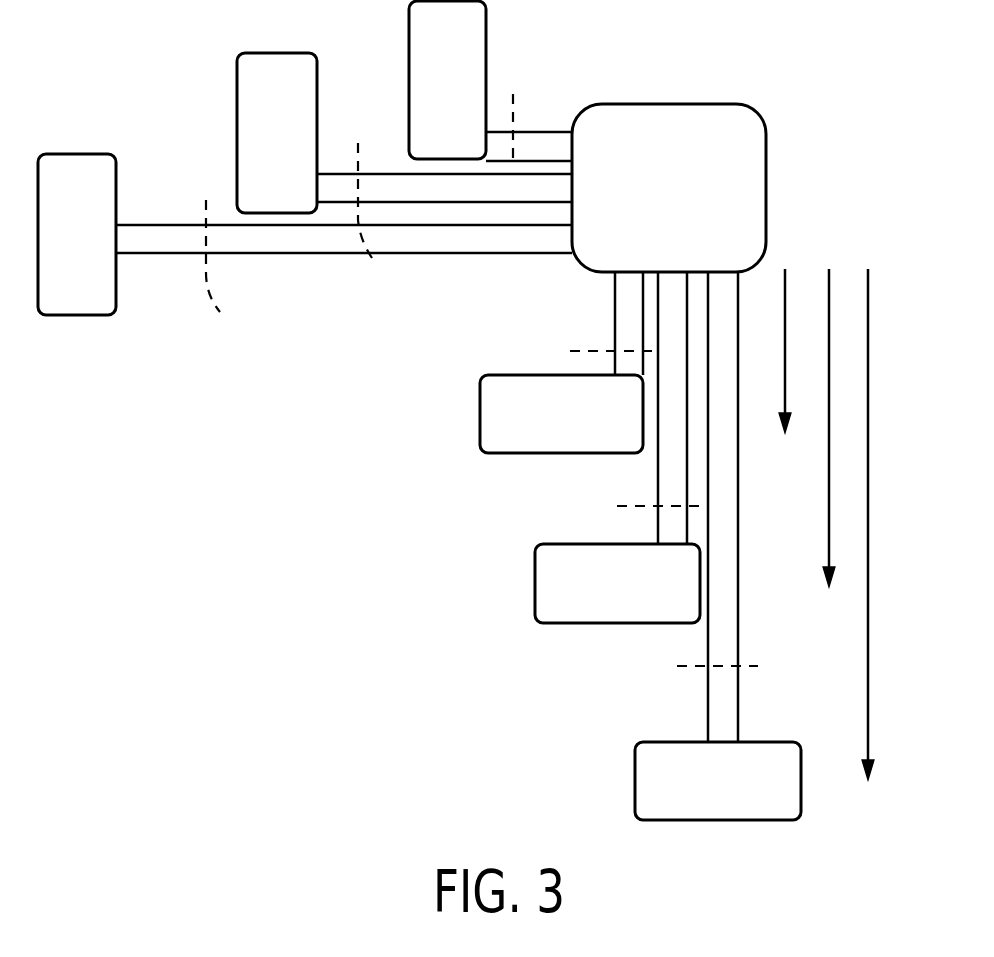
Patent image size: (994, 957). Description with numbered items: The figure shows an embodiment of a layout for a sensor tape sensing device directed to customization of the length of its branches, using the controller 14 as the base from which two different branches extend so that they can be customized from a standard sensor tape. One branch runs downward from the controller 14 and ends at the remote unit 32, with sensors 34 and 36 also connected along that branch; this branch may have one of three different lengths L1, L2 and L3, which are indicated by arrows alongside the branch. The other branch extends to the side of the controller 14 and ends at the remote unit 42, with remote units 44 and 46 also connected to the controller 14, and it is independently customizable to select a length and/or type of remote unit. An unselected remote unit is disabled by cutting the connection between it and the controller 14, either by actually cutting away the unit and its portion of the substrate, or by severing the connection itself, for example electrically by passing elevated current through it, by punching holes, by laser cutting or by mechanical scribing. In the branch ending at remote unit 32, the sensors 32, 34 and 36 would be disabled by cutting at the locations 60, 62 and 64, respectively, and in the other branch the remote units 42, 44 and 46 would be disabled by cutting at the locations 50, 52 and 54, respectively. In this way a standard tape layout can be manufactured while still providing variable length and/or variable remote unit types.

The controller 14 is at (681, 205).
The remote unit 32 is at (730, 800).
The sensor 34 is at (628, 600).
The sensor 36 is at (576, 430).
The remote unit 42 is at (90, 251).
The remote unit 44 is at (290, 152).
The remote unit 46 is at (460, 93).
The cutting location 50 is at (219, 277).
The cutting location 52 is at (370, 219).
The cutting location 54 is at (513, 108).
The cutting location 60 is at (677, 666).
The cutting location 62 is at (617, 506).
The cutting location 64 is at (570, 351).
The length L1 is at (785, 375).
The length L2 is at (828, 452).
The length L3 is at (866, 549).